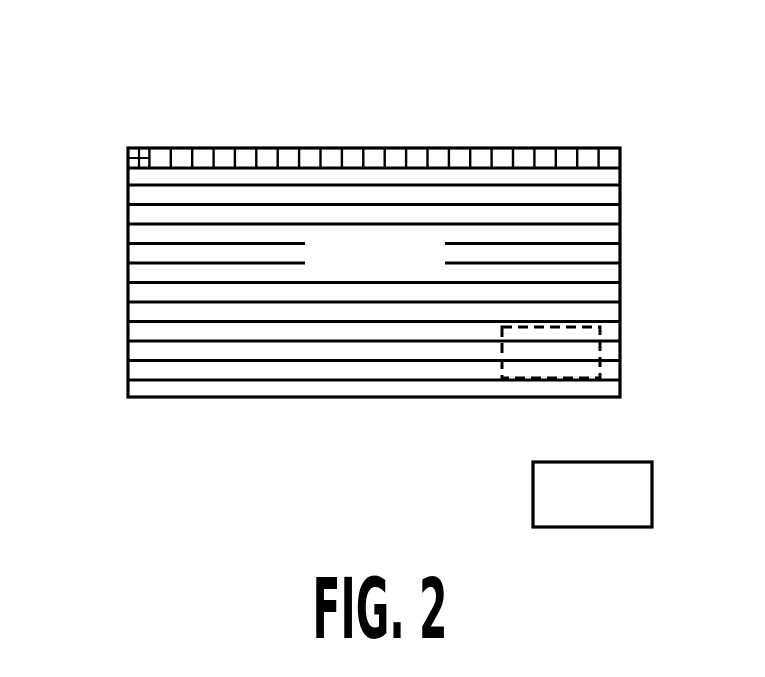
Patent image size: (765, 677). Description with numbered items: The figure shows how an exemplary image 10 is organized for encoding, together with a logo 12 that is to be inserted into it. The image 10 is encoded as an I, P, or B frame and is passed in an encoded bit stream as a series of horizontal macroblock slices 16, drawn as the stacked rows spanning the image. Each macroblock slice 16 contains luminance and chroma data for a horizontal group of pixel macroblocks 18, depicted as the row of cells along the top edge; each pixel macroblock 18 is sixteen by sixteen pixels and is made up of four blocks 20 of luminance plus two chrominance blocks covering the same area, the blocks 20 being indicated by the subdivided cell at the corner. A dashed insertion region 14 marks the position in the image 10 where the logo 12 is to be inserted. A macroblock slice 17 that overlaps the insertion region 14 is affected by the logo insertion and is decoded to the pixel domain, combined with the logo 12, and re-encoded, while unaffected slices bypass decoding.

The image 10 is at (363, 221).
The logo 12 is at (647, 436).
The insertion region 14 is at (600, 328).
The macroblock slice 16 is at (144, 177).
The macroblock slice 17 is at (144, 348).
The pixel macroblock 18 is at (204, 148).
The block 20 is at (133, 148).